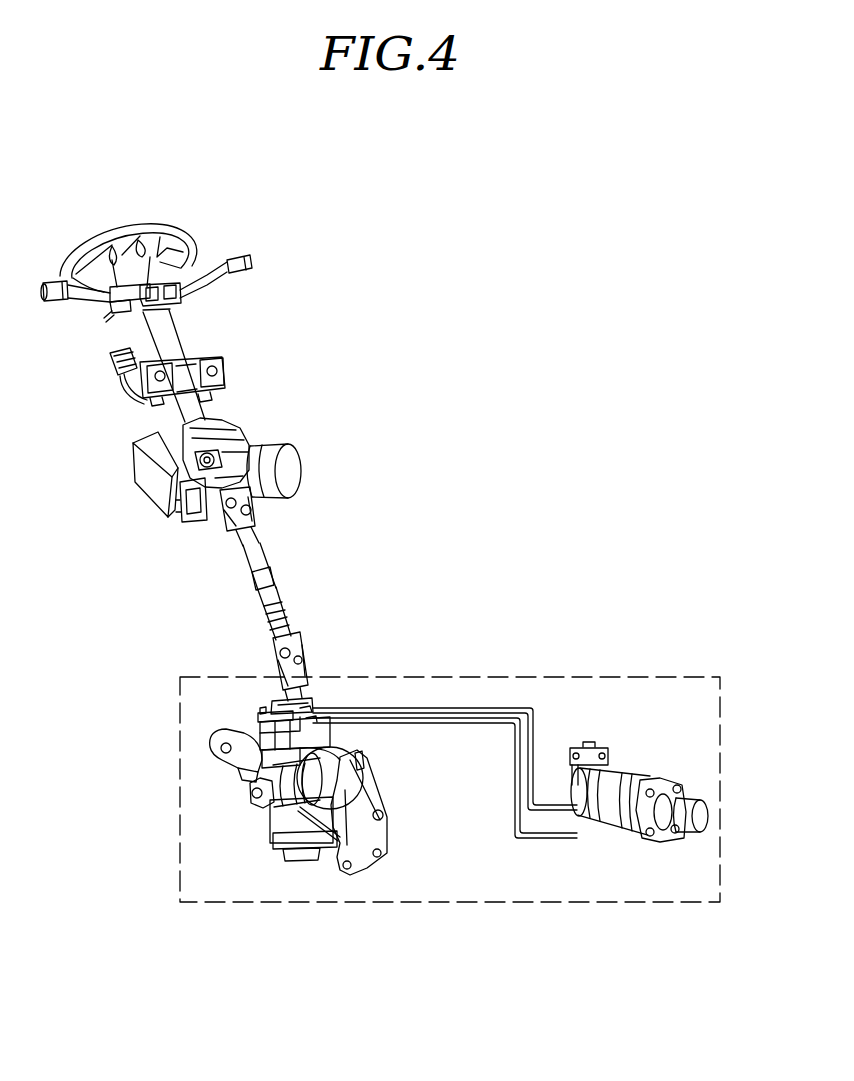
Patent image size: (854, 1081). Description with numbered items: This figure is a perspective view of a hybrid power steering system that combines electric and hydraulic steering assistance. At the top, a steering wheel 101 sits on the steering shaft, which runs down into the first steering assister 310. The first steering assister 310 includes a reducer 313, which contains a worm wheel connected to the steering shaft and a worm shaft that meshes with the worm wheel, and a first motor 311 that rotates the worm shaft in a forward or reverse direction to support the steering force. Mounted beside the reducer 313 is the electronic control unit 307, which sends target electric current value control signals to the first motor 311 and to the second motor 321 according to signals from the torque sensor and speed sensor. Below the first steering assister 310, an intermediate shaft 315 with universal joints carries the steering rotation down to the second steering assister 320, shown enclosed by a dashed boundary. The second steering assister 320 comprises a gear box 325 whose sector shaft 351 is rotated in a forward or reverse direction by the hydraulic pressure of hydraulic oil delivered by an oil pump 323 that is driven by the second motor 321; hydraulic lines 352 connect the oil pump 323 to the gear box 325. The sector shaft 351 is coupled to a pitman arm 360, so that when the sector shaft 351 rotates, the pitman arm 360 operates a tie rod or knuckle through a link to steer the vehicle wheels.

The steering wheel 101 is at (166, 224).
The first steering assister 310 is at (250, 408).
The reducer 313 is at (236, 445).
The first motor 311 is at (287, 477).
The electronic control unit 307 is at (148, 485).
The intermediate shaft 315 is at (270, 593).
The second steering assister 320 is at (175, 693).
The gear box 325 is at (267, 832).
The pitman arm 360 is at (228, 762).
The sector shaft 351 is at (240, 793).
The hydraulic pipes and valve 352 is at (582, 750).
The oil pump 323 is at (630, 780).
The second motor 321 is at (684, 832).